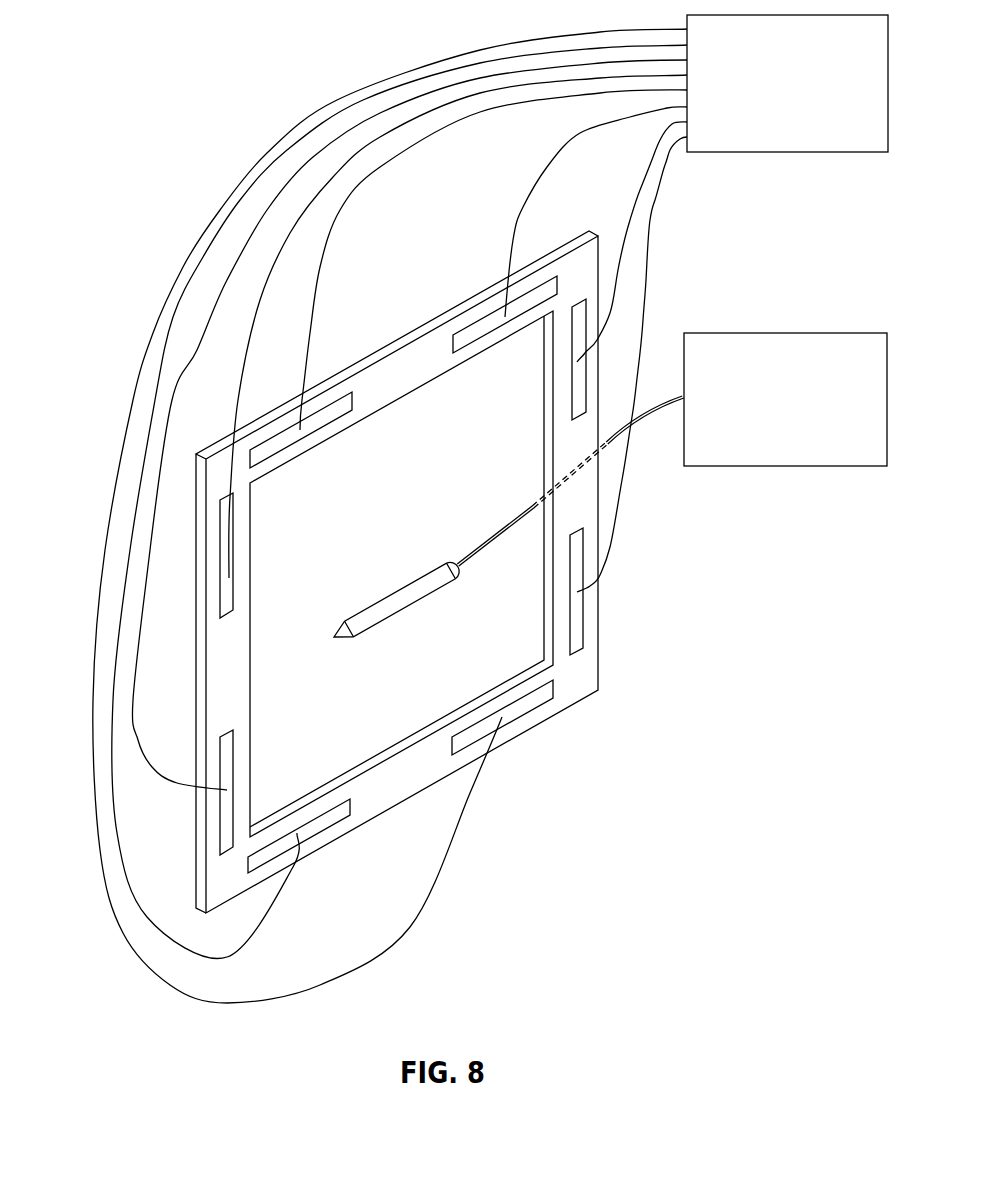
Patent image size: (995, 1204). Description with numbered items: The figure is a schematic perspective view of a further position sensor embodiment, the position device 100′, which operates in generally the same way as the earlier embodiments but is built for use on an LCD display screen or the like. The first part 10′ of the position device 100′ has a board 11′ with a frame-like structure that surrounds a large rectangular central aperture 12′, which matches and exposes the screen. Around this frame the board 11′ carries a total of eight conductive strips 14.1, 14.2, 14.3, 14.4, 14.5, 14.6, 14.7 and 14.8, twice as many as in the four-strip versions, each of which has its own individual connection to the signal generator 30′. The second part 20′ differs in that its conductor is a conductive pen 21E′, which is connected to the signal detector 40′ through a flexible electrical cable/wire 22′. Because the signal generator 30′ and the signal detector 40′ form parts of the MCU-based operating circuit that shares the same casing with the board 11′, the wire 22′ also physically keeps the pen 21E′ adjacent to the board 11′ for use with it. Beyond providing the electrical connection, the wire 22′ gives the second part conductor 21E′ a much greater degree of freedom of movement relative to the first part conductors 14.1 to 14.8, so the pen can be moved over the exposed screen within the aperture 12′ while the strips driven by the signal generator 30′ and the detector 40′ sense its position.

The first part 10′ is at (595, 690).
The board 11′ is at (583, 660).
The central aperture 12′ is at (380, 727).
The conductive strip 14.1 is at (318, 422).
The conductive strip 14.2 is at (485, 328).
The conductive strip 14.3 is at (580, 376).
The conductive strip 14.4 is at (573, 613).
The conductive strip 14.5 is at (513, 707).
The conductive strip 14.6 is at (317, 823).
The conductive strip 14.7 is at (227, 760).
The conductive strip 14.8 is at (223, 576).
The second part 20′ is at (408, 572).
The conductive pen 21E′ is at (403, 598).
The flexible electrical cable/wire 22′ is at (510, 523).
The signal generator 30′ is at (768, 138).
The signal detector 40′ is at (768, 451).
The position device 100′ is at (582, 777).